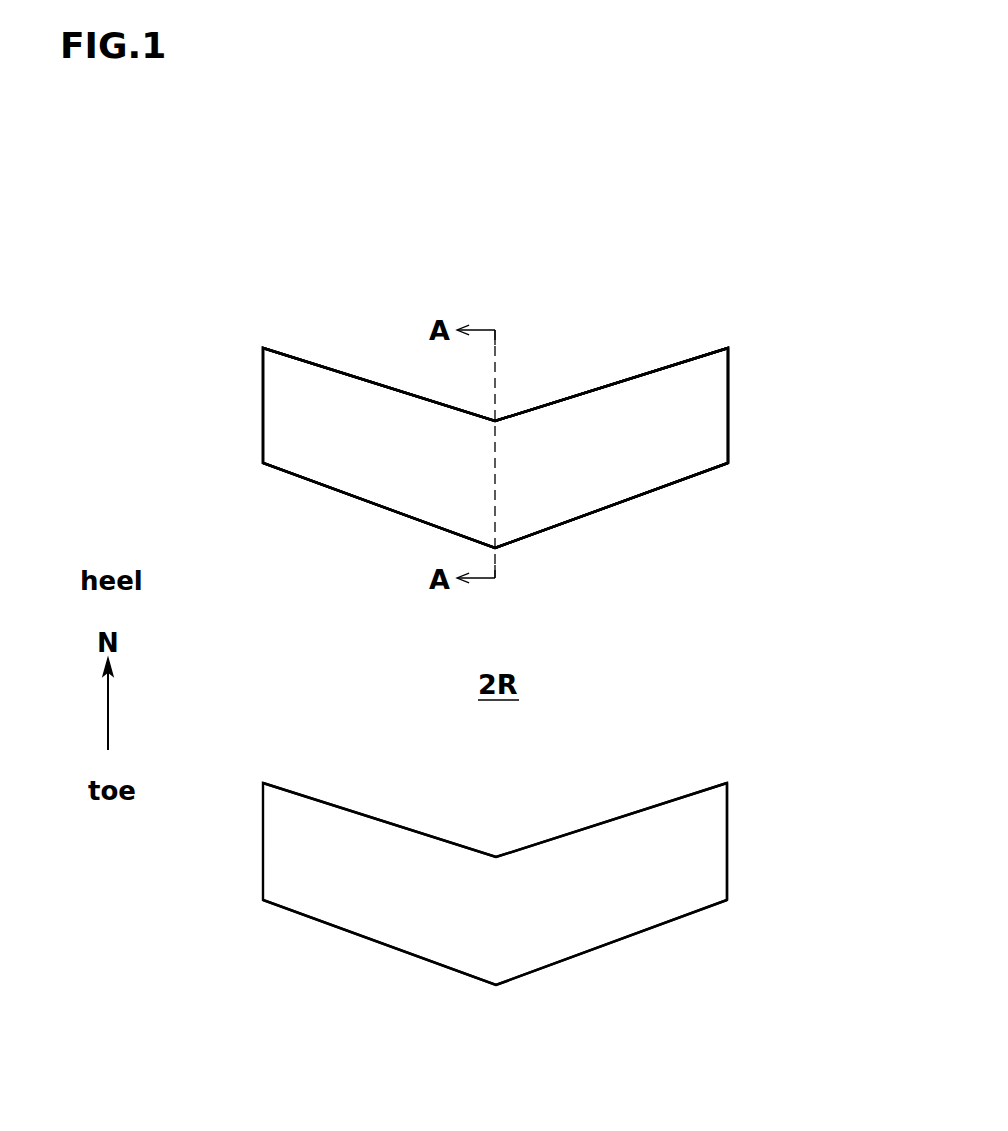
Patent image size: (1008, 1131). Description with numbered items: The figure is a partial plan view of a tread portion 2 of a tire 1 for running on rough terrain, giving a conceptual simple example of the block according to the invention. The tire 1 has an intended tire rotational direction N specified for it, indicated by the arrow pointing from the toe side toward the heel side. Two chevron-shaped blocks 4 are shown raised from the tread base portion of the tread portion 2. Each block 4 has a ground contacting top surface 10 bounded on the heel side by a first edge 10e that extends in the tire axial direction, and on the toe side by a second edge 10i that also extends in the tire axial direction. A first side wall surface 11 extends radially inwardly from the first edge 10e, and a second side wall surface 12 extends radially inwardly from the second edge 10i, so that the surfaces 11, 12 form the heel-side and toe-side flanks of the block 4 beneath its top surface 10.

The tire 1 is at (797, 238).
The tread portion 2 is at (720, 263).
The block 4 is at (740, 405).
The ground contacting top surface 10 is at (325, 448).
The first edge 10e is at (613, 385).
The second edge 10i is at (617, 505).
The first side wall surface 11 is at (318, 345).
The second side wall surface 12 is at (363, 517).